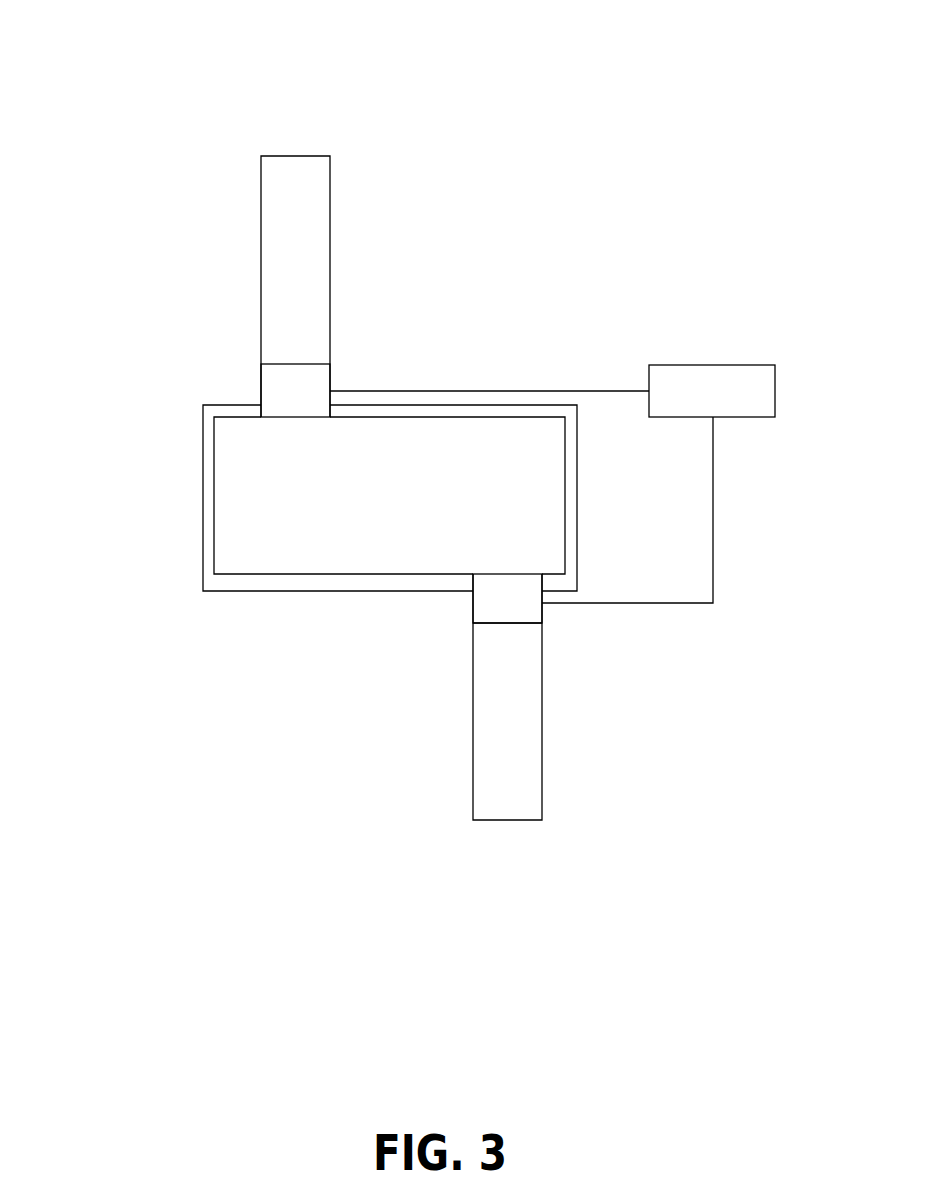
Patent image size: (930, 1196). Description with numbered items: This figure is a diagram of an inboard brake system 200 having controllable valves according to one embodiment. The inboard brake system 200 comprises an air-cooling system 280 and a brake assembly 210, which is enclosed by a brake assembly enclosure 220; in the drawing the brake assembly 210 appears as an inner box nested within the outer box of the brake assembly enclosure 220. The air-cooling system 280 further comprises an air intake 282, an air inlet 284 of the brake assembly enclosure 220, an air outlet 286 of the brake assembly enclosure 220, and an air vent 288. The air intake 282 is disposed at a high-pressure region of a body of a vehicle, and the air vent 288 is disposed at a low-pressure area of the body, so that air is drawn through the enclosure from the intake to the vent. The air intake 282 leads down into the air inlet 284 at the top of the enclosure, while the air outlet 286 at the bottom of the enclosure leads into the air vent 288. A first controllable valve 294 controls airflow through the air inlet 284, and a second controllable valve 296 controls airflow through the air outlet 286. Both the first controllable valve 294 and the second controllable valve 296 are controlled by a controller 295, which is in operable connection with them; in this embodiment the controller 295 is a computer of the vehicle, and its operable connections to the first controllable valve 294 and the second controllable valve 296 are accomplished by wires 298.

The inboard brake system 200 is at (118, 136).
The brake assembly 210 is at (245, 574).
The brake assembly enclosure 220 is at (203, 432).
The air-cooling system 280 is at (510, 333).
The air intake 282 is at (295, 156).
The air inlet 284 is at (272, 417).
The air outlet 286 is at (507, 575).
The air vent 288 is at (507, 820).
The first controllable valve 294 is at (310, 390).
The controller 295 is at (713, 365).
The second controllable valve 296 is at (518, 603).
The wires 298 is at (617, 392).